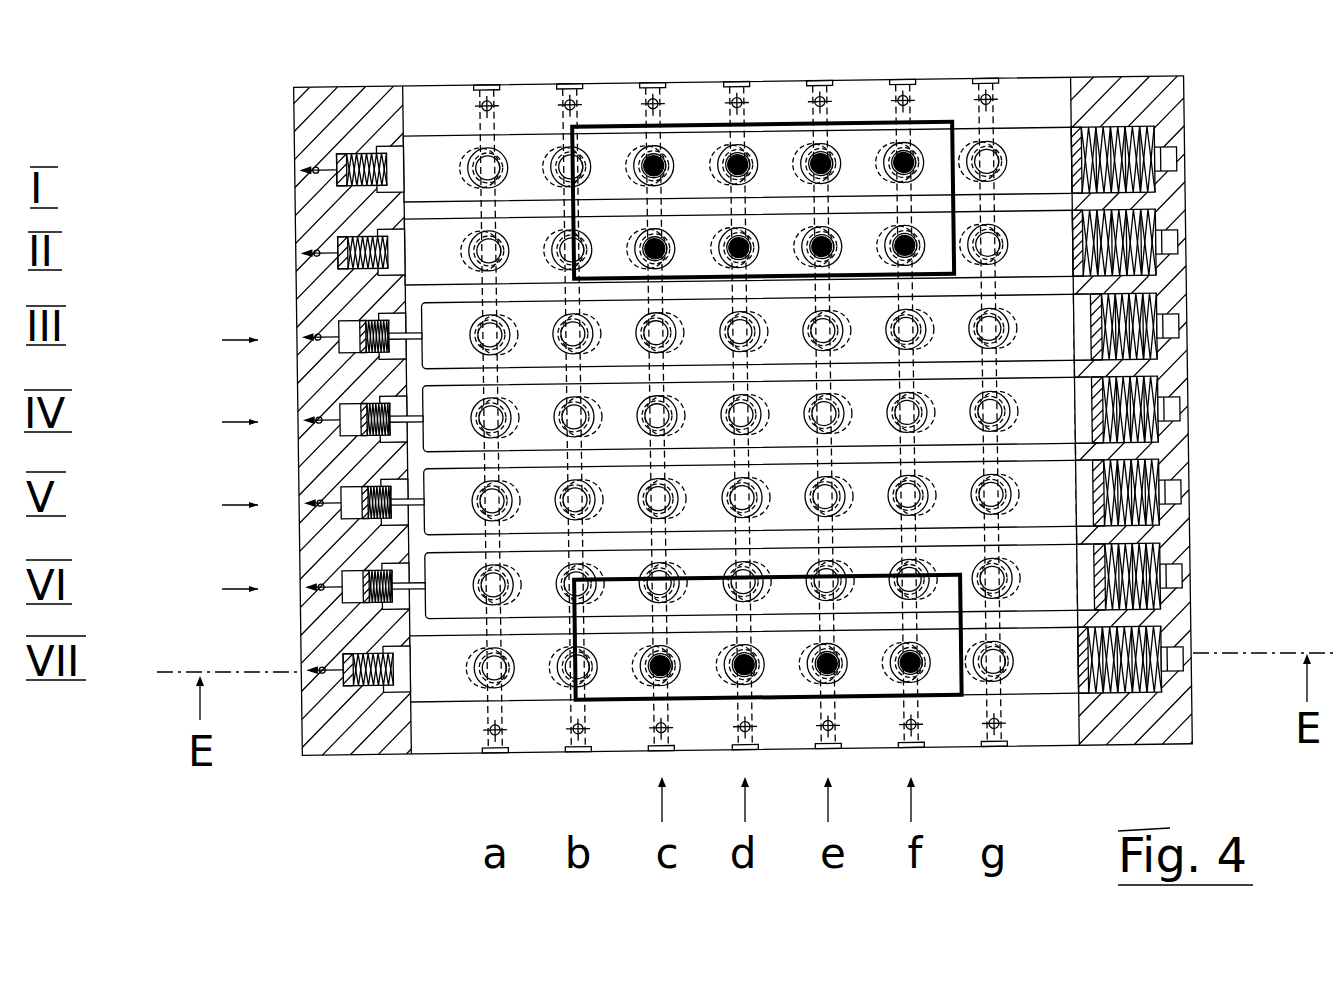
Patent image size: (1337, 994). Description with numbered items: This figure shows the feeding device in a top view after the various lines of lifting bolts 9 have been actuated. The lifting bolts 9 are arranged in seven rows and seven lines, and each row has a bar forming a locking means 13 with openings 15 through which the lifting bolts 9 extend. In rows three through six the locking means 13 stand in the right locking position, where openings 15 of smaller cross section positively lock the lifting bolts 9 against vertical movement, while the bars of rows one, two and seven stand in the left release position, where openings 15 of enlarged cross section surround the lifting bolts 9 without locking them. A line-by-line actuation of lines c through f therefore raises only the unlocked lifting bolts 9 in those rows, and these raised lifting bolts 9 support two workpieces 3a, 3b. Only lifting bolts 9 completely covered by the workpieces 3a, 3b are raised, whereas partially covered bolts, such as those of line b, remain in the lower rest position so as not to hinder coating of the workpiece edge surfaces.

The workpiece 3a is at (603, 685).
The workpiece 3b is at (945, 143).
The lifting bolt 9 is at (983, 157).
The locking means 13 is at (1058, 405).
The opening 15 is at (1020, 323).